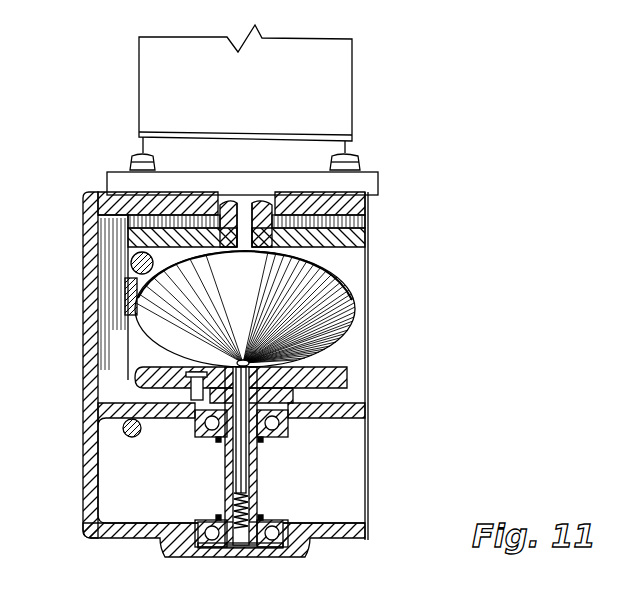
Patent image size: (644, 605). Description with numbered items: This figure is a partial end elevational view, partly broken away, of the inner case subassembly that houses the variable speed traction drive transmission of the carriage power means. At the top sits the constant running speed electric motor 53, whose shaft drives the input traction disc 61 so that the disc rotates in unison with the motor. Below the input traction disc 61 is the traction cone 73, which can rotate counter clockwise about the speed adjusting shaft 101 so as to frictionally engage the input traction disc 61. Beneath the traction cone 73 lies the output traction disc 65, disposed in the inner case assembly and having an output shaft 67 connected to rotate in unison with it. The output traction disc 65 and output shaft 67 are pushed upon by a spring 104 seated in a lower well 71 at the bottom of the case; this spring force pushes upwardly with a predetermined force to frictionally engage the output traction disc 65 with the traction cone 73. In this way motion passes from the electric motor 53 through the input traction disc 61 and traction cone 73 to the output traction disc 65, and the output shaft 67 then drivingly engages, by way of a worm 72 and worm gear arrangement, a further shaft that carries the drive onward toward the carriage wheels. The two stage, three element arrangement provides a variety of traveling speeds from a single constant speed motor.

The electric motor 53 is at (318, 80).
The input traction disc 61 is at (370, 237).
The speed adjusting shaft 101 is at (132, 258).
The traction cone 73 is at (353, 333).
The output traction disc 65 is at (137, 372).
The output shaft 67 is at (227, 447).
The worm 72 is at (227, 465).
The spring 104 is at (250, 505).
The lower well 71 is at (243, 538).